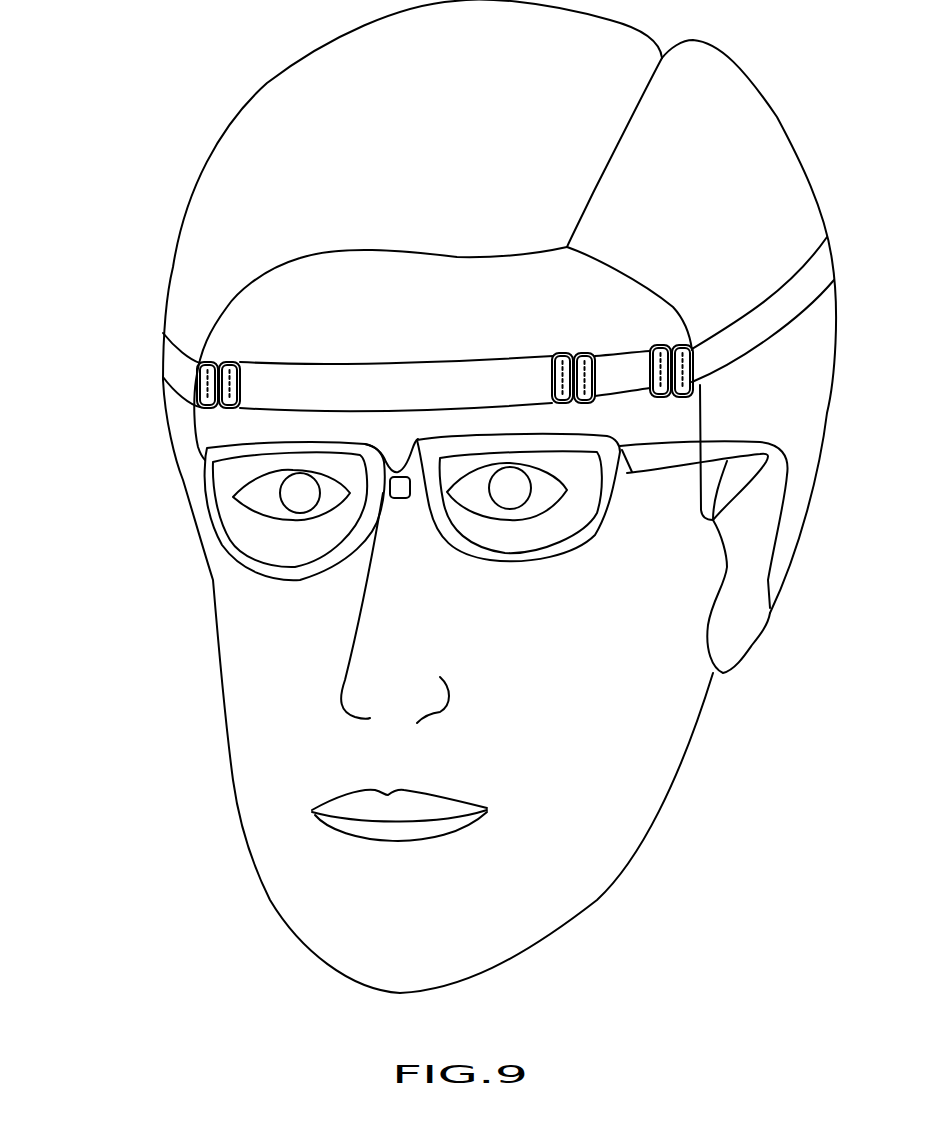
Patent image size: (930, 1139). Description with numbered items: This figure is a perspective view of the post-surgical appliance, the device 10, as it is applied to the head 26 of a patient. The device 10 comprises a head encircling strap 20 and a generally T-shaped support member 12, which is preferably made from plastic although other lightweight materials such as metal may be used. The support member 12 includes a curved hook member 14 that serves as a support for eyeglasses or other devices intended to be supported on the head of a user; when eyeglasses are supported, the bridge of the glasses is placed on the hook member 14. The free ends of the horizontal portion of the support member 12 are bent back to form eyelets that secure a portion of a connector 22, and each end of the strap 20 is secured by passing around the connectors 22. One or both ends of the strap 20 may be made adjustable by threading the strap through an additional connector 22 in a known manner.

The device 10 is at (138, 262).
The support member 12 is at (355, 390).
The hook member 14 is at (403, 500).
The head encircling strap 20 is at (813, 277).
The connector 22 is at (225, 360).
The head of wearer 26 is at (327, 90).